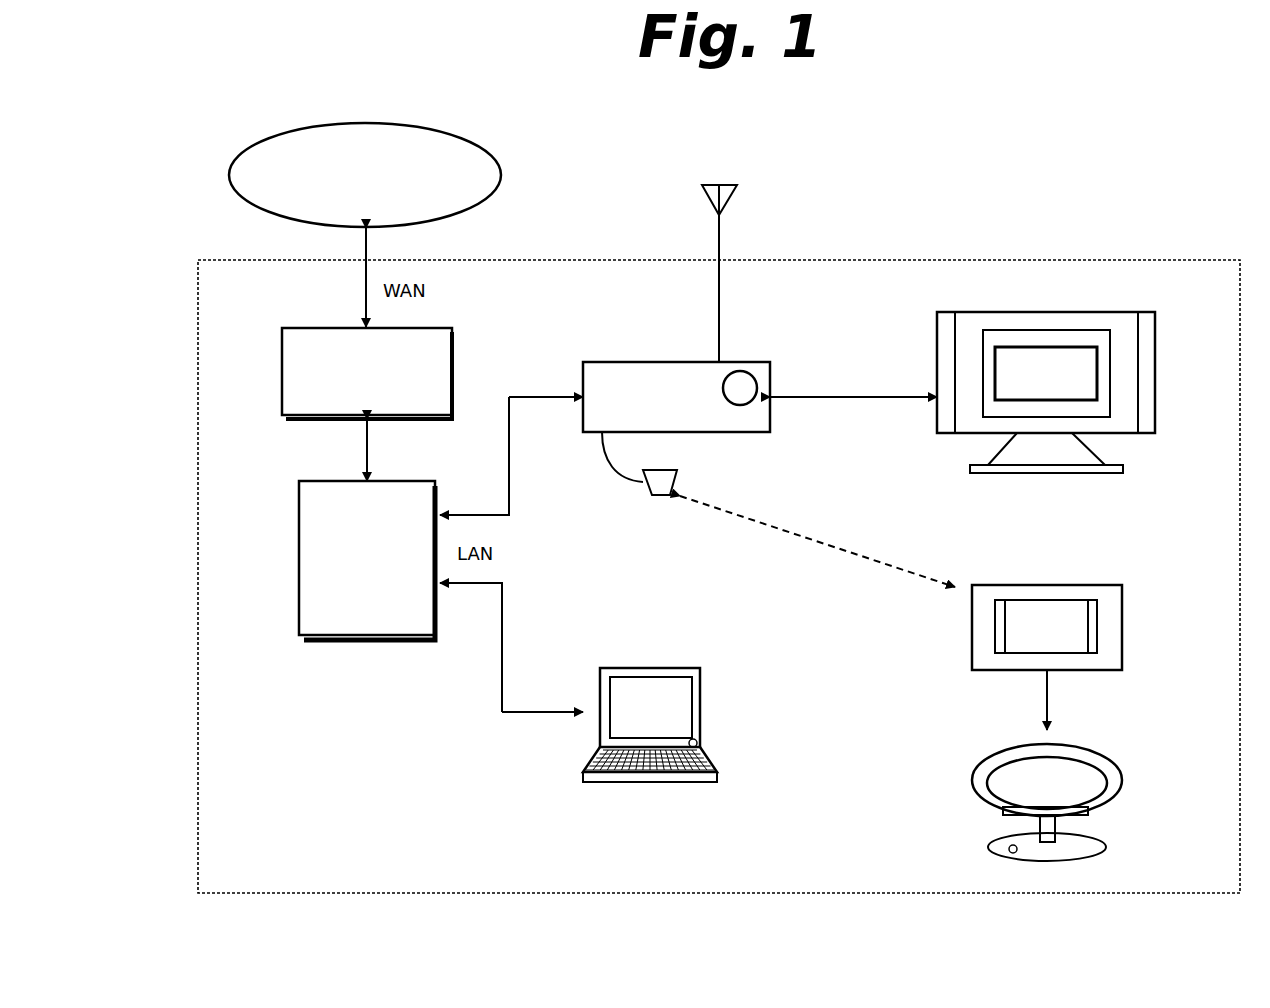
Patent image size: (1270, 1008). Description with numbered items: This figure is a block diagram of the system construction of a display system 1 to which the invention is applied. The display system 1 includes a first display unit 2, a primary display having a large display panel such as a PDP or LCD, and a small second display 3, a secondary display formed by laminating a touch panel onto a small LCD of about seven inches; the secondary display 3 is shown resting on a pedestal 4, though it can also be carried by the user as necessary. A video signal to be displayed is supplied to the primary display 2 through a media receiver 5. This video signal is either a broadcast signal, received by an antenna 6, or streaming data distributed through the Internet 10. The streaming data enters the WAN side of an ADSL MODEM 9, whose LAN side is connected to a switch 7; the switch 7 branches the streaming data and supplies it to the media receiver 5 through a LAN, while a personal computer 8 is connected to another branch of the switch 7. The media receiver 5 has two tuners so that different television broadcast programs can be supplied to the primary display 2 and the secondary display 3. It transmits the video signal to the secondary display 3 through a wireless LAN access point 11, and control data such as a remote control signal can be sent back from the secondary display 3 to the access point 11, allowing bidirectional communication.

The display system 1 is at (1034, 260).
The first display unit 2 is at (1002, 312).
The second display 3 is at (1026, 585).
The pedestal 4 is at (1108, 760).
The media receiver 5 is at (660, 356).
The antenna 6 is at (702, 194).
The switch 7 is at (299, 562).
The personal computer 8 is at (660, 668).
The MODEM 9 is at (282, 372).
The Internet 10 is at (229, 172).
The access point 11 is at (660, 495).